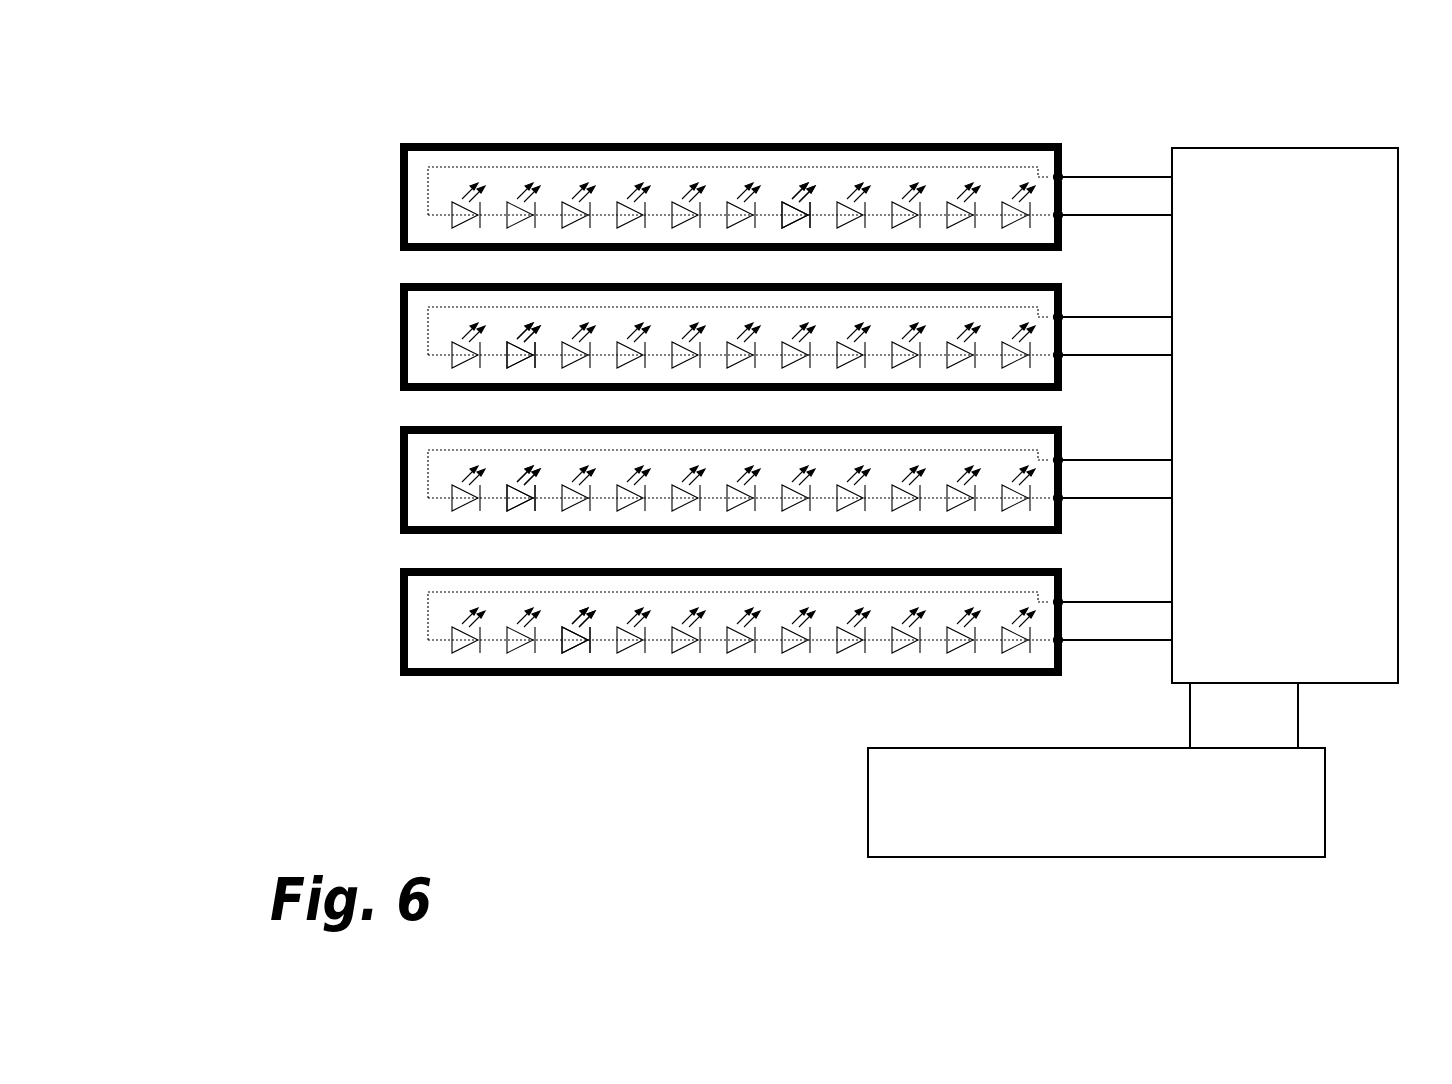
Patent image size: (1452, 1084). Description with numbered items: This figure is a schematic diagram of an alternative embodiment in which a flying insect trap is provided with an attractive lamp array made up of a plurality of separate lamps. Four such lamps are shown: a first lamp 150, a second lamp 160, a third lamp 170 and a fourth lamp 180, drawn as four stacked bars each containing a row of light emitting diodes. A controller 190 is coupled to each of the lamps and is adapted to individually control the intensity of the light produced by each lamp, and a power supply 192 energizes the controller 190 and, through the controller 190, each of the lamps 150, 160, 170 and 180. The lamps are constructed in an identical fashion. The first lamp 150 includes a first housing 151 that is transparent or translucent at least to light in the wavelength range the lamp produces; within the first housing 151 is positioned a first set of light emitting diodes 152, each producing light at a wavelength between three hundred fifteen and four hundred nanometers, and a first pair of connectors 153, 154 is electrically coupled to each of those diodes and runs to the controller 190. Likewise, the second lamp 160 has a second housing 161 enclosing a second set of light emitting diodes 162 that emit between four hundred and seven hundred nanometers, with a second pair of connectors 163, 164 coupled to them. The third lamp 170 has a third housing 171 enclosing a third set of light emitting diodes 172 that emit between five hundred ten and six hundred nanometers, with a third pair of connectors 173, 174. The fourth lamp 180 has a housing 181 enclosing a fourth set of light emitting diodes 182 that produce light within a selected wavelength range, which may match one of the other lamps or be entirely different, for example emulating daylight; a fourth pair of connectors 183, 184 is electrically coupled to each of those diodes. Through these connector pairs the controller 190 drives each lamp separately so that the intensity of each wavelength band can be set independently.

The first lamp 150 is at (699, 154).
The first housing 151 is at (615, 143).
The first set of light emitting diodes 152 is at (812, 201).
The first pair of connectors 153 is at (1073, 170).
The first pair of connectors 154 is at (1074, 218).
The second lamp 160 is at (669, 301).
The second housing 161 is at (425, 283).
The second set of light emitting diodes 162 is at (489, 356).
The second pair of connectors 163 is at (1075, 313).
The second pair of connectors 164 is at (1075, 361).
The third lamp 170 is at (669, 534).
The third housing 171 is at (453, 533).
The third set of light emitting diodes 172 is at (489, 497).
The third pair of connectors 173 is at (1073, 453).
The third pair of connectors 174 is at (1075, 502).
The fourth lamp 180 is at (745, 677).
The housing 181 is at (550, 677).
The fourth set of light emitting diodes 182 is at (588, 653).
The fourth pair of connectors 183 is at (1073, 595).
The fourth pair of connectors 184 is at (1075, 645).
The controller 190 is at (1285, 415).
The power supply 192 is at (899, 866).